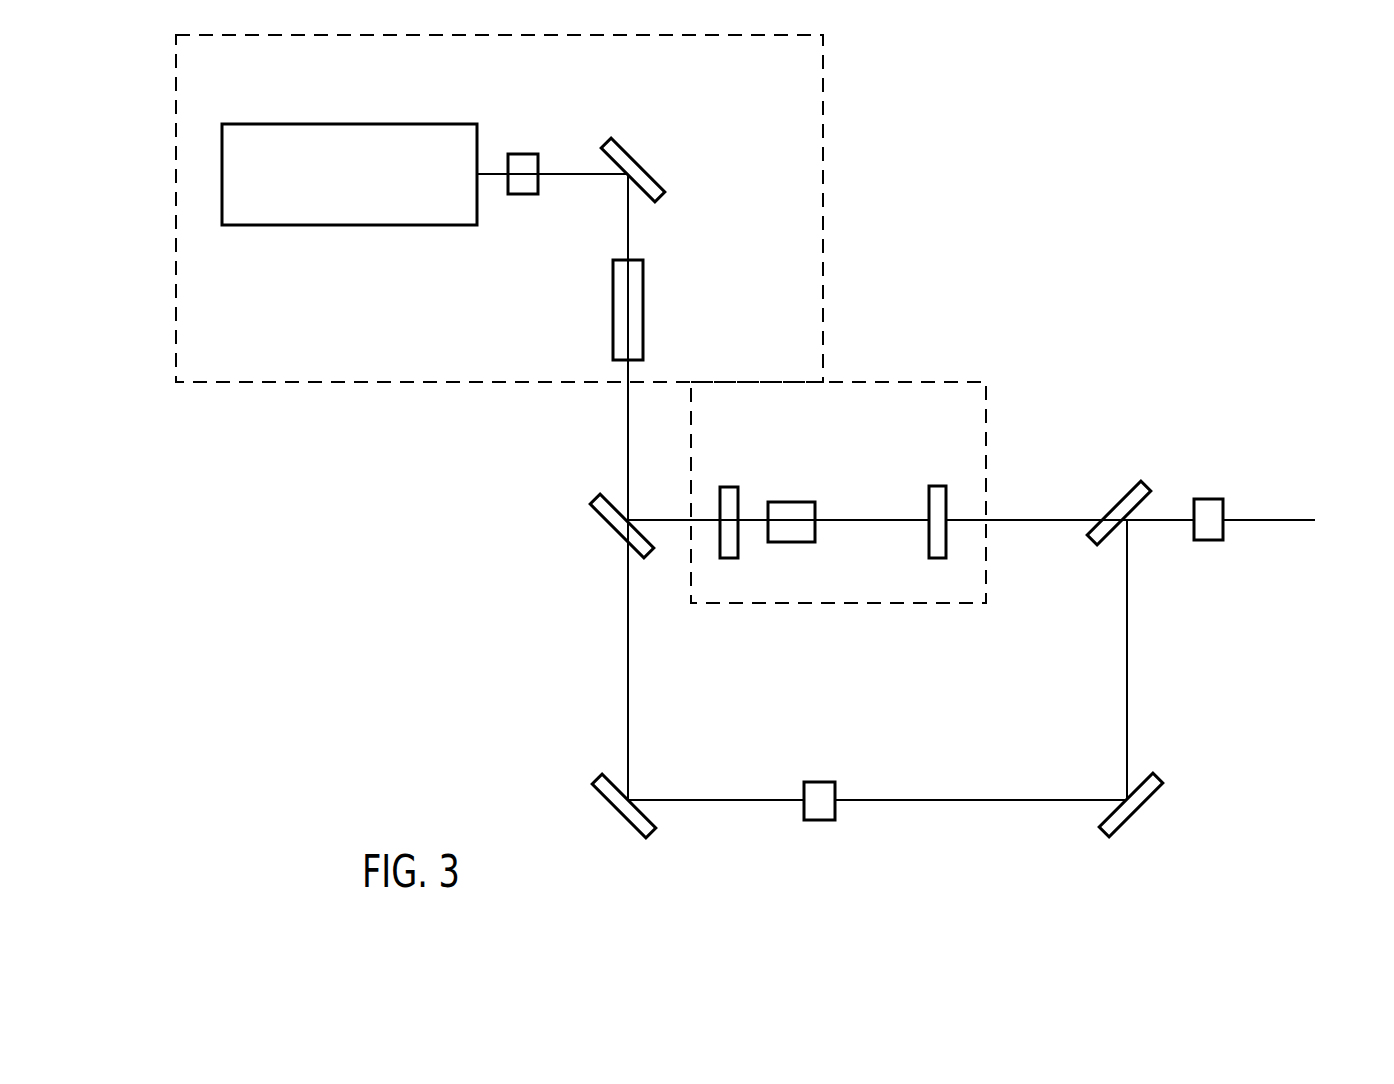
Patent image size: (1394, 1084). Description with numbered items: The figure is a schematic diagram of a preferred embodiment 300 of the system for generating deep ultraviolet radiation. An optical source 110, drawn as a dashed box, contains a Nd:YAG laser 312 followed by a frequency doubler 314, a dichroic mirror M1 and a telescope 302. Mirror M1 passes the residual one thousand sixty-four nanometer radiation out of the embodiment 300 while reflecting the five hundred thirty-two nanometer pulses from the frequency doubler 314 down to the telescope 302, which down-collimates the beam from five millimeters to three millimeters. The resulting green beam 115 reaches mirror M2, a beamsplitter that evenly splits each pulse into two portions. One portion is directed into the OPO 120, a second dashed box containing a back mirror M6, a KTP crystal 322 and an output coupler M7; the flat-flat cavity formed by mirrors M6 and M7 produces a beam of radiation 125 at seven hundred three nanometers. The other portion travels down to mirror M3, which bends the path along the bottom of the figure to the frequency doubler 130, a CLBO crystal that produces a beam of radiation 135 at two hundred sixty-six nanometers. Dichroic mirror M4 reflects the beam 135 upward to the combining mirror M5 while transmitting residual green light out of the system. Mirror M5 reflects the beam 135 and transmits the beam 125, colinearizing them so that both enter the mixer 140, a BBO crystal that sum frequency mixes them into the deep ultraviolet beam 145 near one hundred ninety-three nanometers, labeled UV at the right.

The embodiment 300 is at (1201, 117).
The optical source 110 is at (774, 87).
The OPO 120 is at (891, 424).
The Nd:YAG laser 312 is at (350, 226).
The frequency doubler 314 is at (524, 152).
The telescope 302 is at (647, 308).
The beam 115 is at (627, 419).
The KTP crystal 322 is at (790, 502).
The beam of radiation 125 is at (1040, 522).
The frequency doubler 130 is at (823, 781).
The beam of radiation 135 is at (949, 800).
The mixer 140 is at (1205, 498).
The beam 145 is at (1272, 518).
The dichroic mirror M1 is at (637, 158).
The beamsplitter mirror M2 is at (602, 518).
The mirror M3 is at (608, 803).
The dichroic mirror M4 is at (1148, 805).
The dichroic combining mirror M5 is at (1127, 493).
The back mirror M6 is at (728, 485).
The output coupler M7 is at (936, 486).